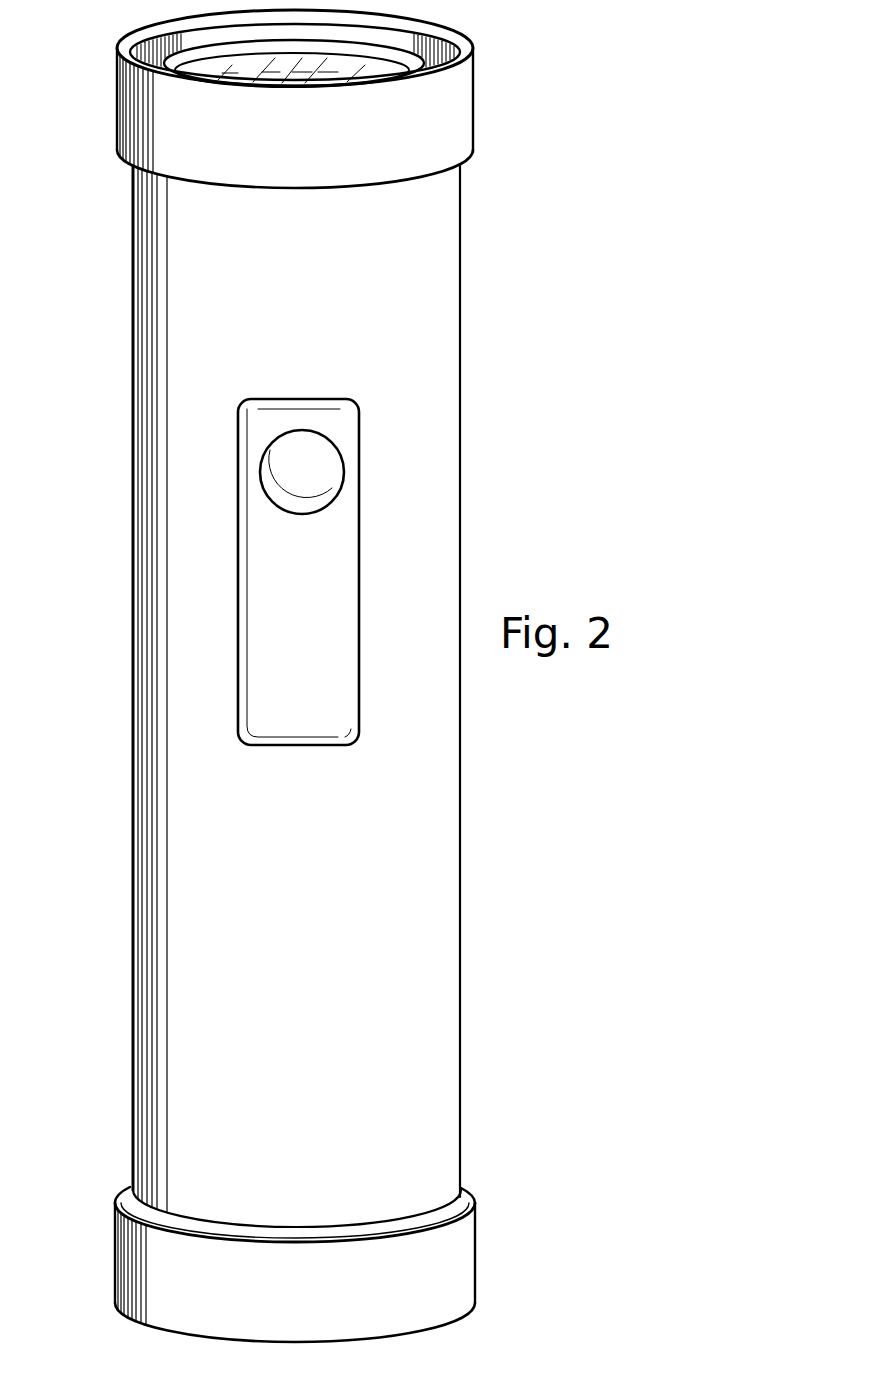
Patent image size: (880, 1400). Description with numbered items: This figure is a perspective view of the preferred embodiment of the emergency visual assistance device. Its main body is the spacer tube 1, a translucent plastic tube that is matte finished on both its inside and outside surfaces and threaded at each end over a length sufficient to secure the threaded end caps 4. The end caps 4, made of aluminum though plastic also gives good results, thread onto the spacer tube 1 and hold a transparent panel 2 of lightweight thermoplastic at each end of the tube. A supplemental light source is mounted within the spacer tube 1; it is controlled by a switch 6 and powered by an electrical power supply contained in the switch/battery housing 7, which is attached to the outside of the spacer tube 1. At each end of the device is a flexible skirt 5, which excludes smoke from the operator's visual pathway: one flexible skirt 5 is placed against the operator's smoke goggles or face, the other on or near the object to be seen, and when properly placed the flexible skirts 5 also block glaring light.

The spacer tube 1 is at (357, 246).
The transparent panel 2 is at (330, 73).
The end cap 4 is at (428, 60).
The flexible skirt 5 is at (400, 135).
The switch 6 is at (300, 468).
The switch/battery housing 7 is at (293, 626).